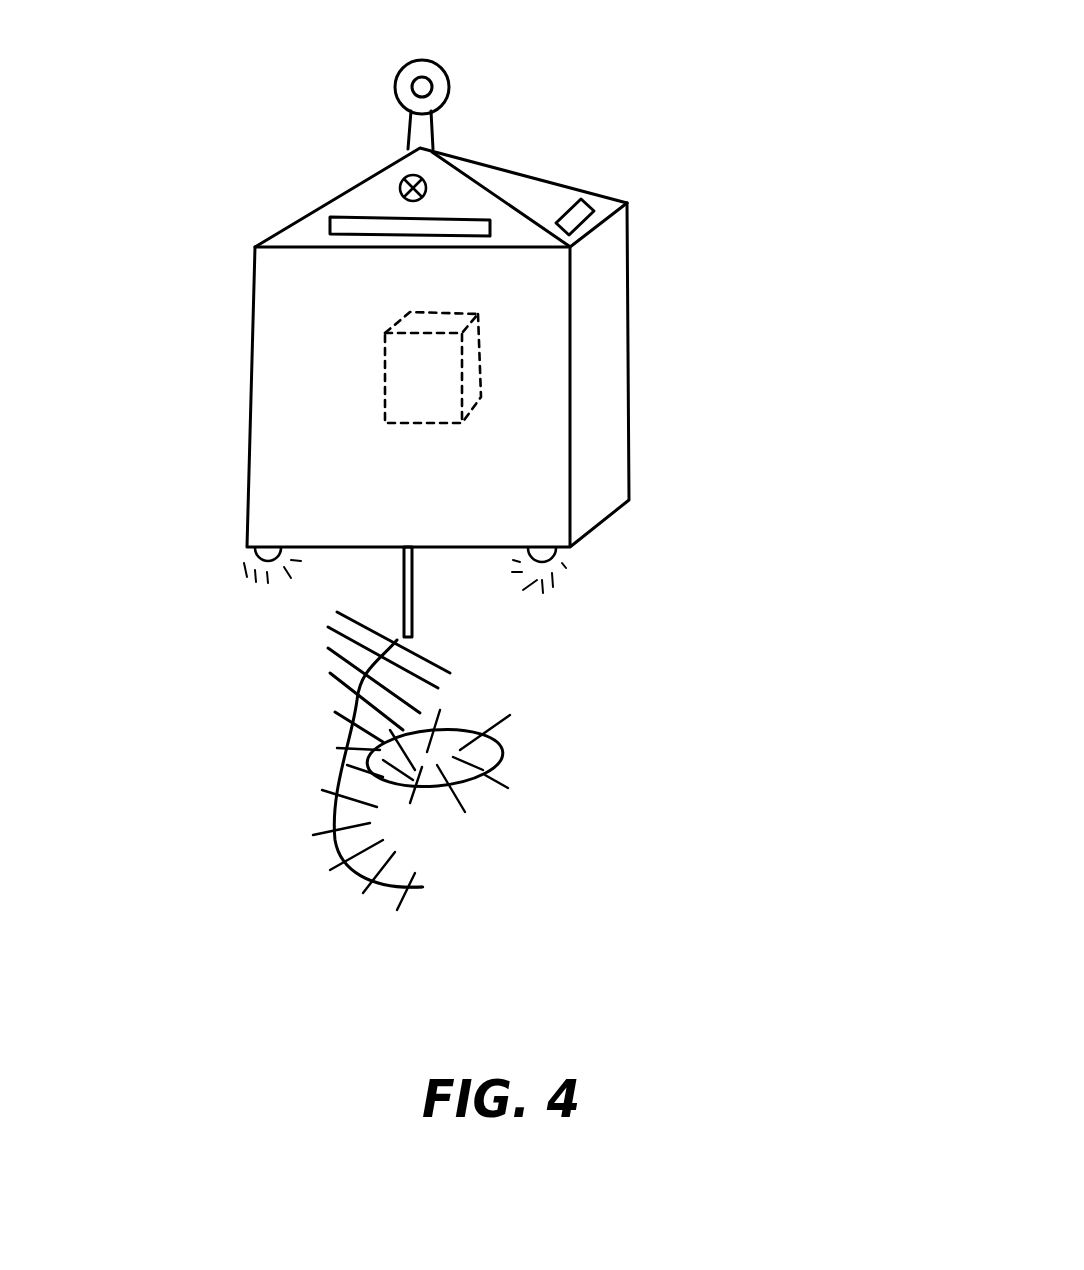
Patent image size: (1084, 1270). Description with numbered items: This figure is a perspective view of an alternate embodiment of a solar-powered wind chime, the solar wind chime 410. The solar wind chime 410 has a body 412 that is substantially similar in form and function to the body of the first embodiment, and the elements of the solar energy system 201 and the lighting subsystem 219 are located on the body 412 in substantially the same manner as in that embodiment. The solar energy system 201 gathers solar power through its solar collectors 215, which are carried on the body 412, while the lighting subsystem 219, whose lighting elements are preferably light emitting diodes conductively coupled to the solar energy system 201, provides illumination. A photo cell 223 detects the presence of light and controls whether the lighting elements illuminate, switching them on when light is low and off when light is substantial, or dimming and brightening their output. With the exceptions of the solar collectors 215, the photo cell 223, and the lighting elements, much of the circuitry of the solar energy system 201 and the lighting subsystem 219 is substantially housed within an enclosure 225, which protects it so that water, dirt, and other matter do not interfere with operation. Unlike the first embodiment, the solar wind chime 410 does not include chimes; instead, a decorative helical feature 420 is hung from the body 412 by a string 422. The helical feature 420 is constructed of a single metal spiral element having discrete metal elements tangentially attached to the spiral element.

The solar wind chime 410 is at (742, 112).
The body 412 is at (640, 311).
The solar collectors 215 is at (352, 221).
The photo cell 223 is at (426, 178).
The enclosure 225 is at (415, 378).
The solar energy system 201 is at (370, 405).
The lighting subsystem 219 is at (246, 559).
The string 422 is at (403, 580).
The decorative helical feature 420 is at (503, 750).